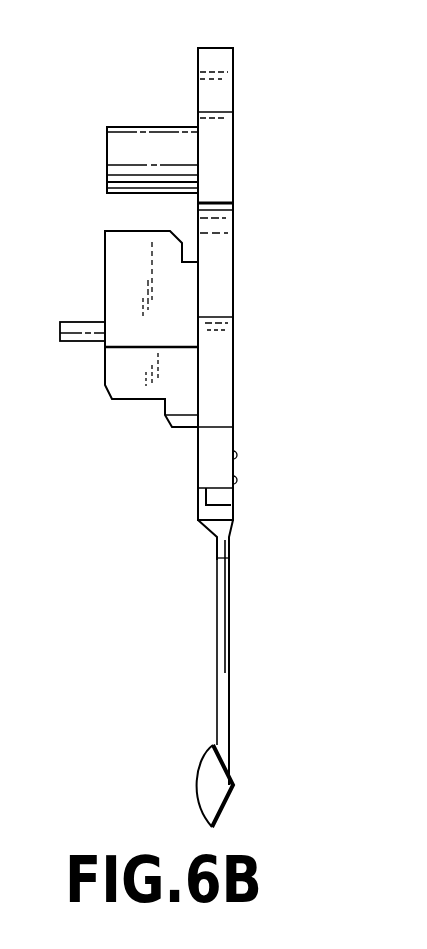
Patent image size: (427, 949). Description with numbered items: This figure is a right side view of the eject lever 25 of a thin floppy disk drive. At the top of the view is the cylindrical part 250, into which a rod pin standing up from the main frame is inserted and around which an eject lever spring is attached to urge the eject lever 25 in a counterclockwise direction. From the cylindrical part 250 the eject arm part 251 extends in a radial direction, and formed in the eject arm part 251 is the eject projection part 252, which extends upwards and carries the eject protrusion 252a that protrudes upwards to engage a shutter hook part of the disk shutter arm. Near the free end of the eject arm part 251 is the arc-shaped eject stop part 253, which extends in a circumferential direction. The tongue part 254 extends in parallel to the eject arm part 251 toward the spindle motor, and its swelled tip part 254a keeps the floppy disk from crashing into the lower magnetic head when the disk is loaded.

The eject lever 25 is at (197, 60).
The cylindrical part 250 is at (130, 127).
The eject arm part 251 is at (220, 292).
The eject projection part 252 is at (122, 367).
The eject protrusion 252a is at (72, 323).
The eject stop part 253 is at (205, 459).
The tongue part 254 is at (220, 648).
The tip part 254a is at (200, 787).